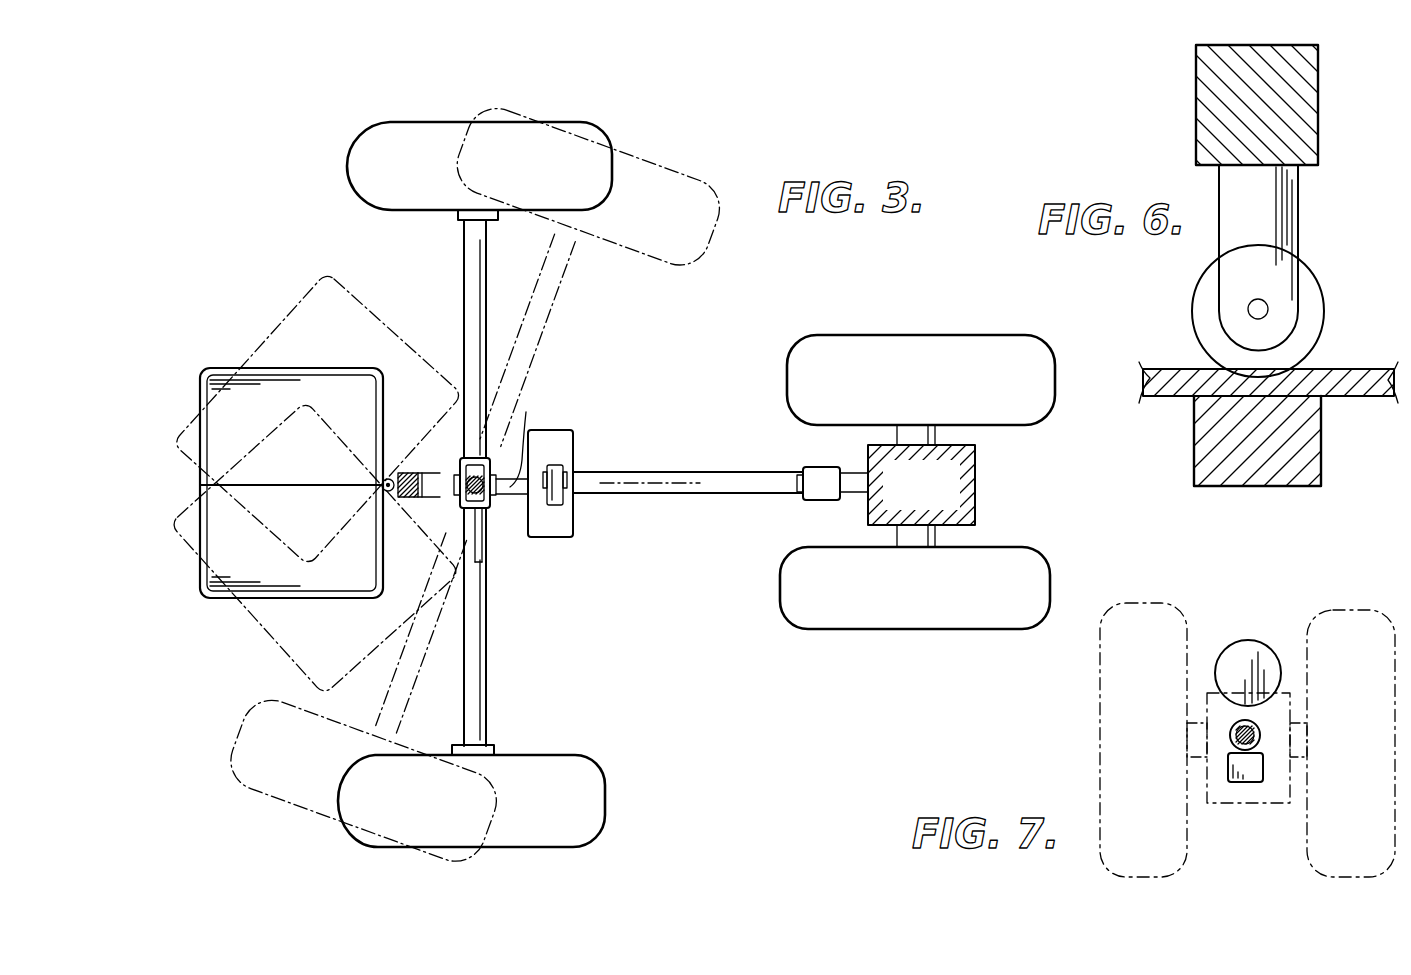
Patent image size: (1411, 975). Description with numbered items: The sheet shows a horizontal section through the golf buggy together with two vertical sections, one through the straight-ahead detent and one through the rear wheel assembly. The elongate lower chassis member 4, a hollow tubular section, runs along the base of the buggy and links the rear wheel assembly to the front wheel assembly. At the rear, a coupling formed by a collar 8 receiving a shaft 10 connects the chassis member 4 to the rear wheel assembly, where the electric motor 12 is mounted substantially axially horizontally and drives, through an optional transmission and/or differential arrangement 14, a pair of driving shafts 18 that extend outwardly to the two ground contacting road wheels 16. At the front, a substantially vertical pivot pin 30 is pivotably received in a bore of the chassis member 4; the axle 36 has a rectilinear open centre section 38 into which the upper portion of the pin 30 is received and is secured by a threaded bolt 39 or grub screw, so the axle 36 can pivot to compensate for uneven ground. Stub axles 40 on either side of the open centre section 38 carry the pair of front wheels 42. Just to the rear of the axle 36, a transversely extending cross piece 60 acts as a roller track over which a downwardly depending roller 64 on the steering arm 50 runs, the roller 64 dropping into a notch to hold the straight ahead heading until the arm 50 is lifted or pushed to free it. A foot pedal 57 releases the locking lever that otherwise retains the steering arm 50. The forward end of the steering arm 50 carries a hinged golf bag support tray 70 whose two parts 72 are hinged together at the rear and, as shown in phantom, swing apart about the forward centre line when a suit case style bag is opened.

In FIG. 3, the lower chassis member 4 is at (768, 480).
In FIG. 6, the lower chassis member 4 is at (1290, 462).
In FIG. 7, the lower chassis member 4 is at (1246, 783).
In FIG. 3, the collar 8 is at (822, 484).
In FIG. 7, the collar 8 is at (1258, 725).
In FIG. 3, the shaft 10 is at (858, 485).
In FIG. 7, the shaft 10 is at (1262, 738).
In FIG. 7, the electric motor 12 is at (1243, 653).
In FIG. 3, the transmission and/or differential arrangement 14 is at (962, 484).
In FIG. 7, the transmission and/or differential arrangement 14 is at (1282, 792).
In FIG. 3, the road wheels 16 is at (787, 383).
In FIG. 7, the road wheels 16 is at (1162, 603).
In FIG. 3, the driving shafts 18 is at (917, 432).
In FIG. 7, the driving shafts 18 is at (1190, 742).
In FIG. 3, the pivot pin 30 is at (462, 476).
In FIG. 3, the axle 36 is at (492, 633).
In FIG. 3, the open centre section 38 is at (478, 560).
In FIG. 3, the threaded bolt 39 is at (533, 432).
In FIG. 3, the stub axles 40 is at (470, 270).
In FIG. 3, the ground contacting wheels 42 is at (640, 152).
In FIG. 6, the steering arm 50 is at (1305, 128).
In FIG. 3, the foot pedal 57 is at (615, 538).
In FIG. 3, the cross piece 60 is at (562, 446).
In FIG. 6, the cross piece 60 is at (1360, 369).
In FIG. 3, the roller 64 is at (556, 500).
In FIG. 6, the roller 64 is at (1312, 296).
In FIG. 3, the support tray 70 is at (203, 608).
In FIG. 3, the tray parts 72 is at (280, 326).